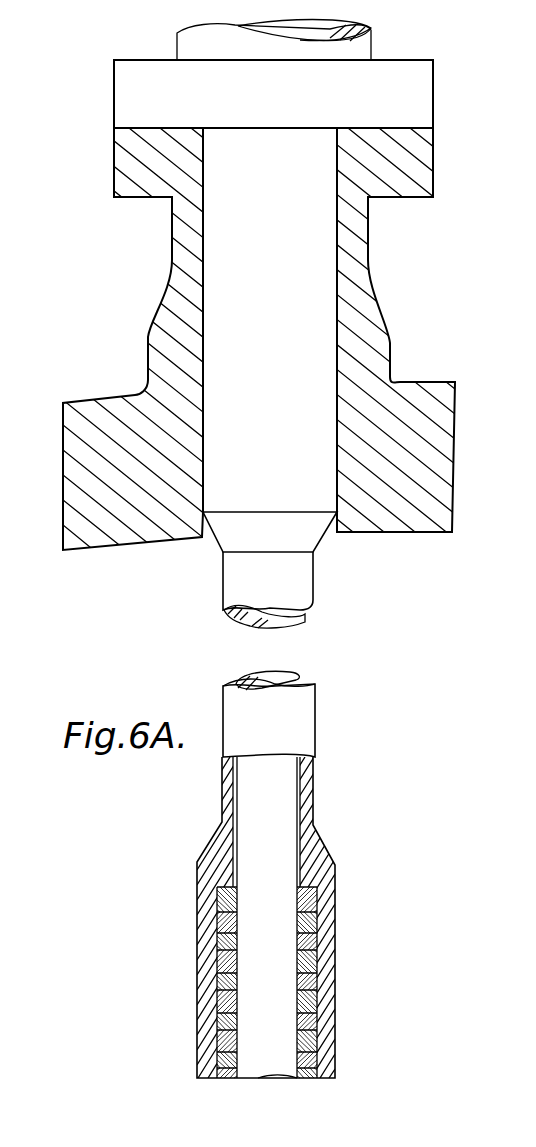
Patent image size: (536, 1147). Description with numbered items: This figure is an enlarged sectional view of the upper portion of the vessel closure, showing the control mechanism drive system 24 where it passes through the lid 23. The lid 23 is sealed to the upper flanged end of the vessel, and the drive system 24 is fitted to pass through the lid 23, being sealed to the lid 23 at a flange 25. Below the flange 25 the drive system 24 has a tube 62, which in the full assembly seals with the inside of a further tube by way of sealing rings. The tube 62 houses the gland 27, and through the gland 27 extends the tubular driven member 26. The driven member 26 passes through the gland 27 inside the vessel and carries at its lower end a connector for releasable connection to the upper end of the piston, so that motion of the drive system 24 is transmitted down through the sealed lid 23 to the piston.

The lid 23 is at (427, 397).
The control mechanism drive system 24 is at (373, 48).
The flange 25 is at (433, 105).
The driven member 26 is at (272, 983).
The gland 27 is at (305, 958).
The tube 62 is at (308, 608).